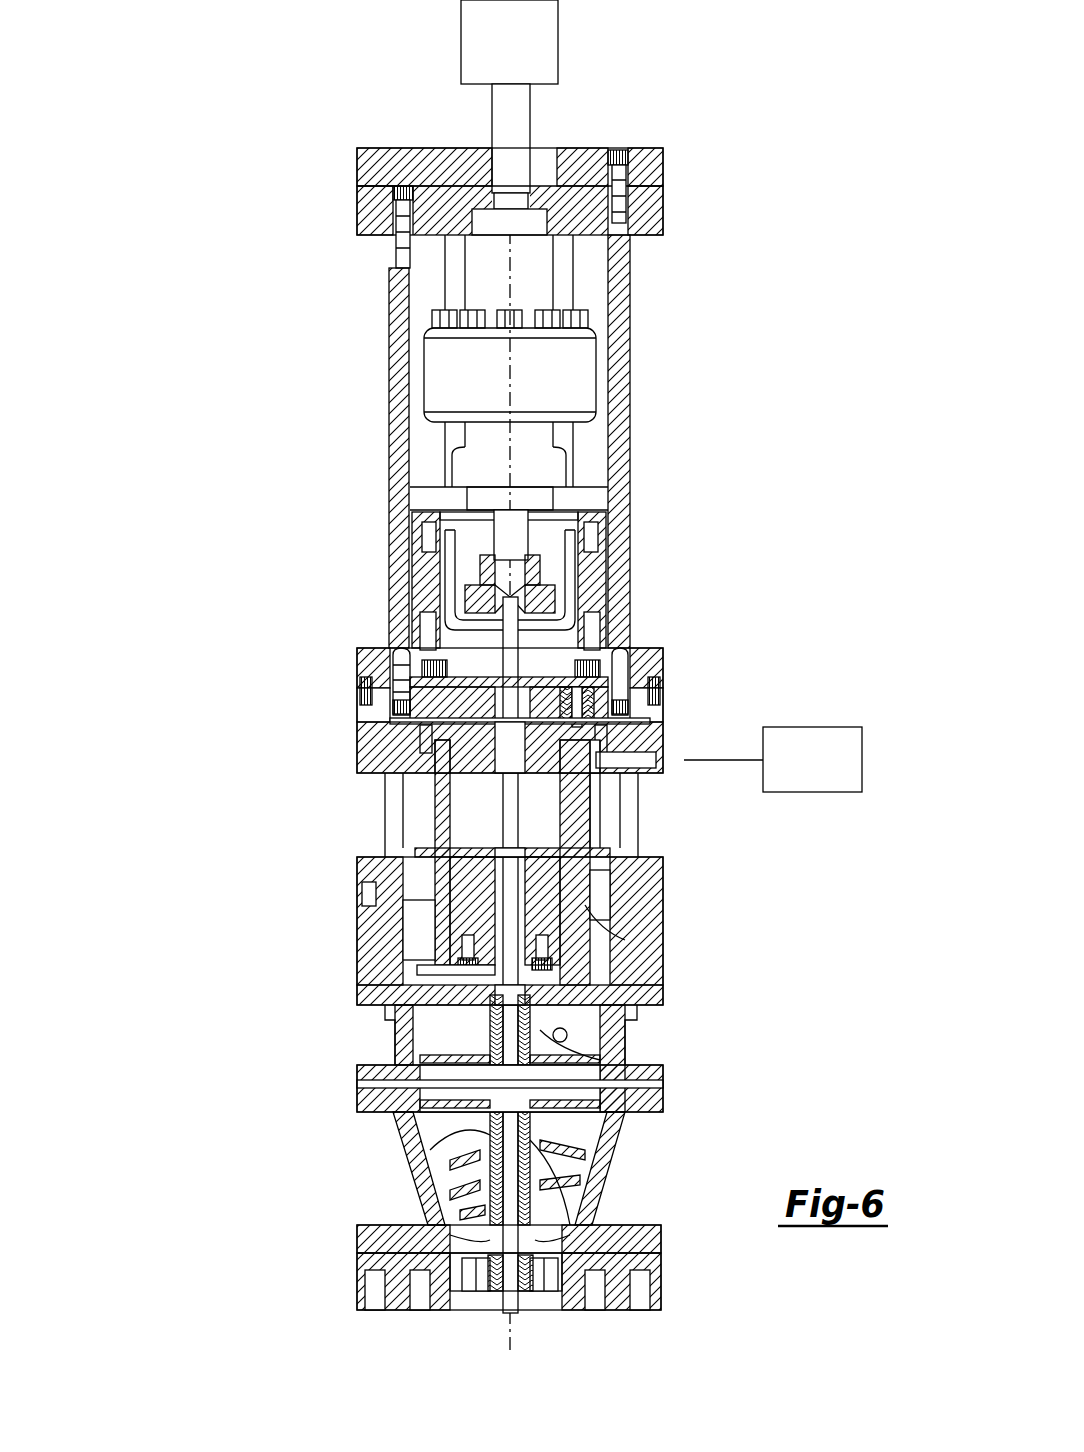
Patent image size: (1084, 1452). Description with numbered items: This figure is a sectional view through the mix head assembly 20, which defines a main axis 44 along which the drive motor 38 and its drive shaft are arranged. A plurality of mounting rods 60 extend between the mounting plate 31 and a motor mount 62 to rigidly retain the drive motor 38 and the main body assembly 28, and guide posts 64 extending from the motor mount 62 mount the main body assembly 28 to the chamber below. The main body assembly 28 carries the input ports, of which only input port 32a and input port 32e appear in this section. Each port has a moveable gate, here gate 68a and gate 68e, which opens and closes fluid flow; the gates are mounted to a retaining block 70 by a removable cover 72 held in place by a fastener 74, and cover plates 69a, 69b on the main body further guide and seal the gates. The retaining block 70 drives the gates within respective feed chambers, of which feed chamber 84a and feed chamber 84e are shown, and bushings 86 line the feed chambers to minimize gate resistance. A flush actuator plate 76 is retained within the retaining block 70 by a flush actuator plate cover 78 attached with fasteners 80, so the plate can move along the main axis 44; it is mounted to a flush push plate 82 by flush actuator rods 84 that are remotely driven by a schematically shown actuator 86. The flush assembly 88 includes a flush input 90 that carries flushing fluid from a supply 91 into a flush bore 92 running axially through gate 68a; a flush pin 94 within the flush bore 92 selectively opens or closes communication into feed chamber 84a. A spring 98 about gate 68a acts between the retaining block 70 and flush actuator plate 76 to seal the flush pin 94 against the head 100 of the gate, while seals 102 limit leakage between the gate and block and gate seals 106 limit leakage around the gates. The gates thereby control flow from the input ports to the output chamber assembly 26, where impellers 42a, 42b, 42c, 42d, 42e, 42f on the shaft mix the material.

The mix head assembly 20 is at (186, 523).
The output chamber assembly 26 is at (331, 1092).
The main body assembly 28 is at (276, 859).
The mounting plate 31 is at (648, 165).
The input port 32a is at (660, 962).
The input port 32e is at (366, 876).
The drive motor 38 is at (566, 383).
The impeller 42a is at (600, 1047).
The impeller 42b is at (560, 1070).
The impeller 42c is at (585, 1152).
The impeller 42d is at (470, 1137).
The impeller 42e is at (470, 1197).
The impeller 42f is at (476, 1216).
The main axis 44 is at (512, 124).
The mounting rods 60 is at (622, 414).
The motor mount 62 is at (385, 655).
The guide posts 64 is at (640, 842).
The moveable gate 68a is at (630, 822).
The moveable gate 68e is at (440, 792).
The cover plate 69a is at (432, 850).
The cover plate 69b is at (420, 872).
The retaining block 70 is at (648, 746).
The removable cover 72 is at (428, 727).
The fastener 74 is at (548, 712).
The flush actuator plate 76 is at (620, 673).
The flush actuator plate cover 78 is at (392, 680).
The fasteners 80 is at (366, 705).
The flush push plate 82 is at (376, 214).
The flush actuator rods 84 is at (400, 373).
The feed chamber 84a is at (622, 1028).
The feed chamber 84e is at (450, 968).
The actuator 86 is at (523, 55).
The flush assembly 88 is at (668, 760).
The flush input 90 is at (658, 770).
The flushing fluid supply 91 is at (812, 792).
The flush bore 92 is at (600, 850).
The flush pin 94 is at (640, 862).
The spring 98 is at (628, 662).
The head 100 is at (625, 932).
The seals 102 is at (545, 790).
The gate seals 106 is at (600, 878).